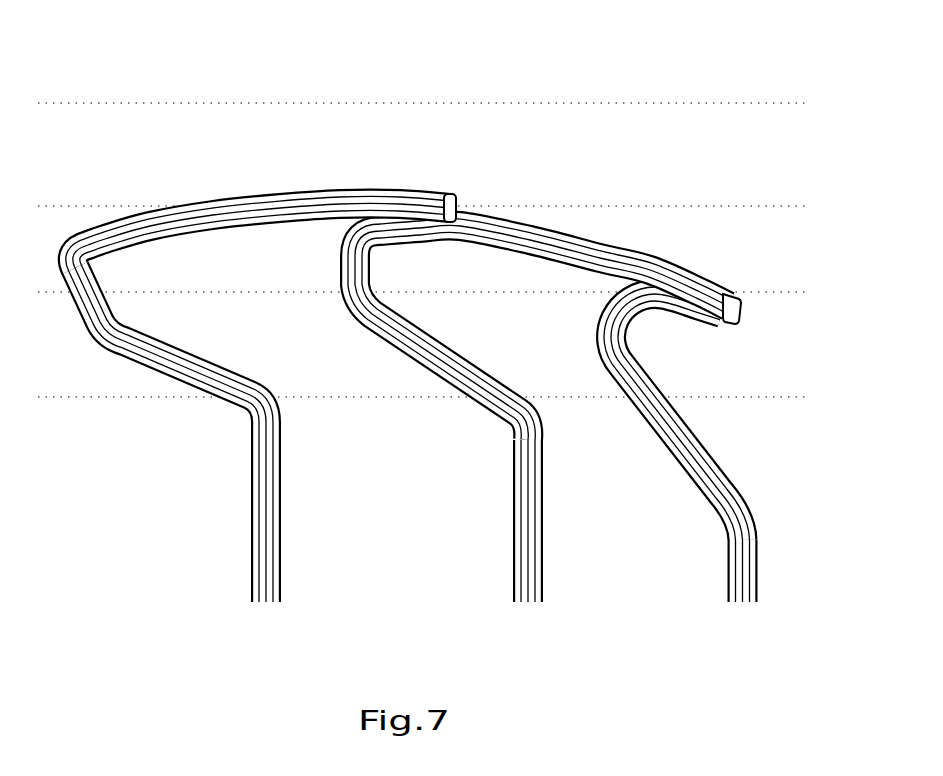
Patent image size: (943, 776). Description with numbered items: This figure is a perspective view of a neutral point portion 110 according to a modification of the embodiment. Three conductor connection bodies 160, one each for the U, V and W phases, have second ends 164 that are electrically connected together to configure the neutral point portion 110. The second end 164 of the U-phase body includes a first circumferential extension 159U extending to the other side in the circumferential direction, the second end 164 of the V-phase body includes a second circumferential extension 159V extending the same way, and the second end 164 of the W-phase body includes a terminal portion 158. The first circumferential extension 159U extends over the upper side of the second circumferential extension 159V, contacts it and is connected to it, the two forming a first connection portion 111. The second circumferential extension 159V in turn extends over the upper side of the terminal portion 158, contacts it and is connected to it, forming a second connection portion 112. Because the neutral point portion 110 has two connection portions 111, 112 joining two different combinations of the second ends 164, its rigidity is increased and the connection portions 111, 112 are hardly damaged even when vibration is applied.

The neutral point portion 110 is at (671, 138).
The first connection portion 111 is at (426, 190).
The second connection portion 112 is at (746, 296).
The terminal portion 158 is at (700, 313).
The first circumferential extension 159U is at (213, 201).
The second circumferential extension 159V is at (553, 233).
The conductor connection body 160 is at (248, 568).
The second end 164 is at (603, 323).